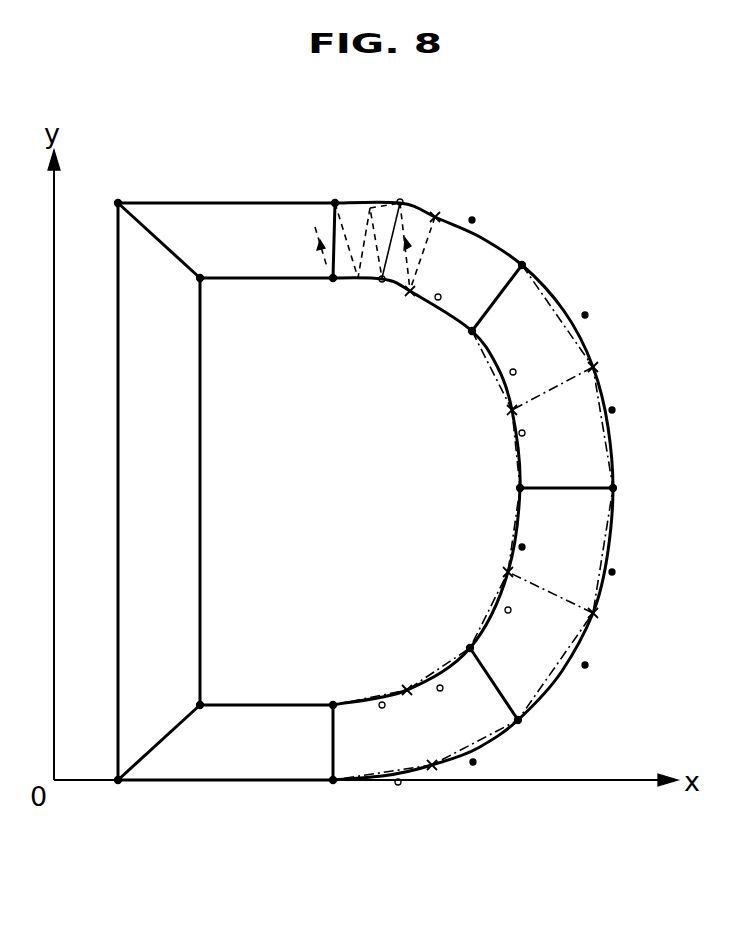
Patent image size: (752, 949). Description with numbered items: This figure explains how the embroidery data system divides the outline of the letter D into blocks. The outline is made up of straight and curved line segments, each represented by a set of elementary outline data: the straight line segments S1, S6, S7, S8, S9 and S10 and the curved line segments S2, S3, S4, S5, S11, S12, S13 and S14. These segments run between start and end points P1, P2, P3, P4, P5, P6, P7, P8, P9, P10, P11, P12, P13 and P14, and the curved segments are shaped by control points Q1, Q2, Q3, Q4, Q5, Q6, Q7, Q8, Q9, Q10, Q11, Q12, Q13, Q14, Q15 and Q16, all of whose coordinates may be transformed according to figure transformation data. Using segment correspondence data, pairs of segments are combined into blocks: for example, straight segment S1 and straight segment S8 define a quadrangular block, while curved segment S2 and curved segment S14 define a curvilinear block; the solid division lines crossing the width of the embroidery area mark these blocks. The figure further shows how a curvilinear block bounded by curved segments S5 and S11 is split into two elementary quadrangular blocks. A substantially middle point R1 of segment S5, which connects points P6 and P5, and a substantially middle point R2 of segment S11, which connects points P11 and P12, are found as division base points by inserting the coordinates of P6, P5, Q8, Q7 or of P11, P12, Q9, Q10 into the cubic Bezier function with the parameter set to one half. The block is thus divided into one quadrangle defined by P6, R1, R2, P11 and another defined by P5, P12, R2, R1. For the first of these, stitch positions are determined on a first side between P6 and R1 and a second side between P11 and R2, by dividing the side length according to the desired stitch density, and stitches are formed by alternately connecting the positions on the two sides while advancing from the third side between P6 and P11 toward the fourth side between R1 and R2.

The start and end point P1 is at (116, 801).
The start and end point P2 is at (333, 798).
The start and end point P3 is at (541, 730).
The start and end point P4 is at (636, 492).
The start and end point P5 is at (540, 254).
The start and end point P6 is at (334, 188).
The start and end point P7 is at (113, 188).
The start and end point P8 is at (329, 691).
The start and end point P9 is at (217, 691).
The start and end point P10 is at (220, 262).
The start and end point P11 is at (335, 294).
The start and end point P12 is at (470, 334).
The start and end point P13 is at (495, 491).
The start and end point P14 is at (500, 653).
The control point Q1 is at (404, 799).
The control point Q2 is at (473, 766).
The control point Q3 is at (603, 680).
The control point Q4 is at (636, 575).
The control point Q5 is at (635, 412).
The control point Q6 is at (606, 314).
The control point Q7 is at (494, 221).
The control point Q8 is at (402, 187).
The control point Q9 is at (380, 284).
The control point Q10 is at (461, 282).
The control point Q11 is at (533, 359).
The control point Q12 is at (552, 437).
The control point Q13 is at (551, 548).
The control point Q14 is at (538, 618).
The control point Q15 is at (465, 698).
The control point Q16 is at (389, 725).
The middle point of segment S5 R1 is at (454, 201).
The middle point of segment S11 R2 is at (421, 312).
The straight line segment S1 is at (218, 782).
The curved line segment S2 is at (494, 740).
The line segment S3 is at (600, 630).
The line segment S4 is at (602, 372).
The curved line segment S5 is at (434, 216).
The line segment S6 is at (226, 203).
The line segment S7 is at (116, 466).
The straight line segment S8 is at (276, 704).
The line segment S9 is at (203, 470).
The line segment S10 is at (266, 280).
The curved line segment S11 is at (396, 286).
The line segment S12 is at (500, 392).
The line segment S13 is at (505, 548).
The curved line segment S14 is at (445, 668).